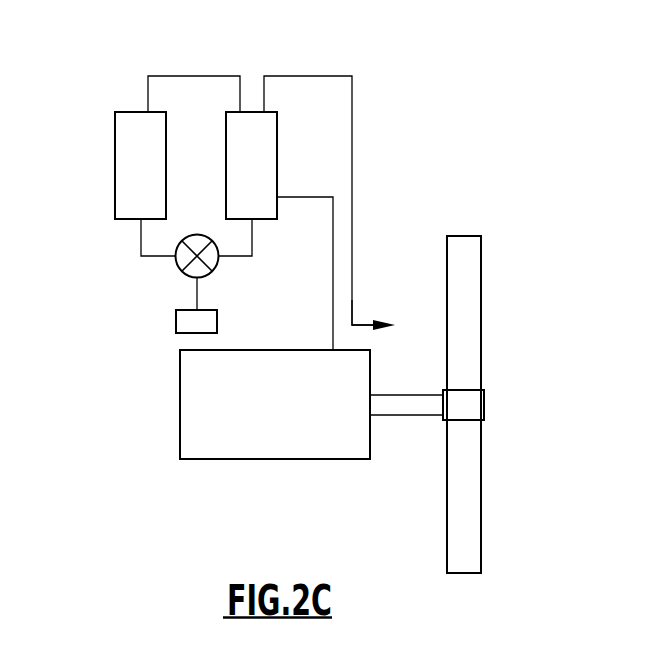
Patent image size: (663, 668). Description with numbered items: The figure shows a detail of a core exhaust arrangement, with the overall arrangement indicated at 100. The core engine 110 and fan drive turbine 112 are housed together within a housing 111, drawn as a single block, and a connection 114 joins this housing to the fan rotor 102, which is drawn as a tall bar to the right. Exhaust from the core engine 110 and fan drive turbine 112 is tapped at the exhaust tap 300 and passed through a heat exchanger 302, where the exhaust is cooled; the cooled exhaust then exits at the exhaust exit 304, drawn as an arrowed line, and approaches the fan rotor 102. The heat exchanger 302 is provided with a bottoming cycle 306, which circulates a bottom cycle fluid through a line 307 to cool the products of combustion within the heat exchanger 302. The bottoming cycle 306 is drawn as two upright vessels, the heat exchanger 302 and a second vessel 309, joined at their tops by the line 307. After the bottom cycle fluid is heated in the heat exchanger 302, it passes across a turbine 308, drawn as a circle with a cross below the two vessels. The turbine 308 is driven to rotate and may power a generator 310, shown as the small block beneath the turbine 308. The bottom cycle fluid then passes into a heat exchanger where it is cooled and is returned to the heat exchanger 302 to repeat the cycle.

The vehicle system 100 is at (438, 176).
The fan rotor 102 is at (468, 273).
The core engine 110 is at (275, 404).
The fan drive turbine 112 is at (275, 404).
The housing 111 is at (243, 459).
The connection 114 is at (428, 400).
The exhaust tap 300 is at (298, 195).
The heat exchanger 302 is at (262, 138).
The exhaust exit 304 is at (353, 300).
The bottoming cycle 306 is at (112, 89).
The line 307 is at (207, 75).
The turbine 308 is at (175, 262).
The first tank 309 is at (127, 180).
The generator 310 is at (182, 322).